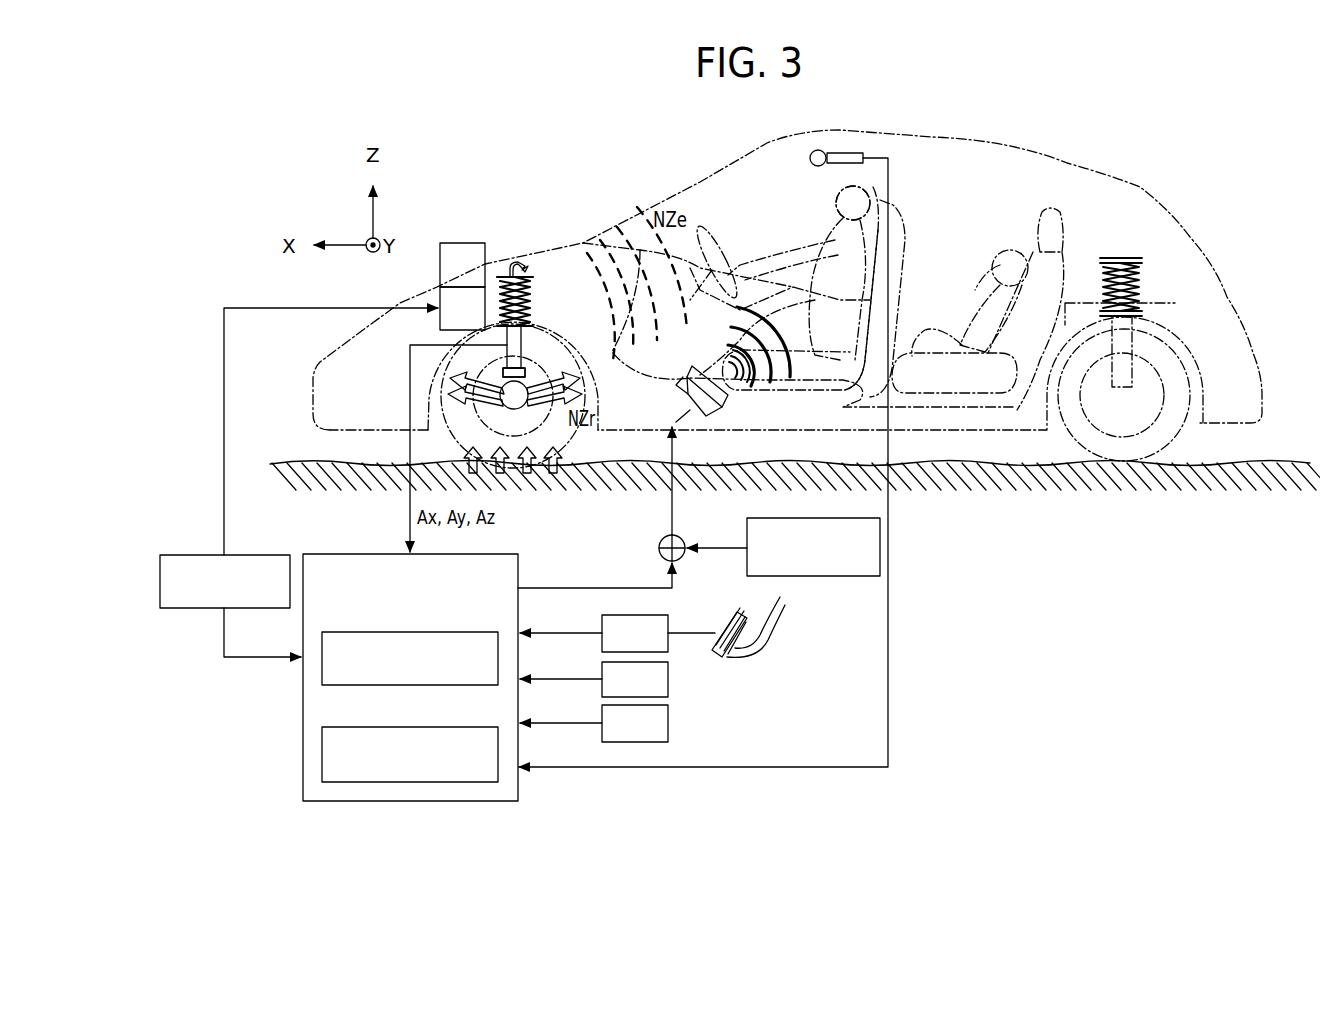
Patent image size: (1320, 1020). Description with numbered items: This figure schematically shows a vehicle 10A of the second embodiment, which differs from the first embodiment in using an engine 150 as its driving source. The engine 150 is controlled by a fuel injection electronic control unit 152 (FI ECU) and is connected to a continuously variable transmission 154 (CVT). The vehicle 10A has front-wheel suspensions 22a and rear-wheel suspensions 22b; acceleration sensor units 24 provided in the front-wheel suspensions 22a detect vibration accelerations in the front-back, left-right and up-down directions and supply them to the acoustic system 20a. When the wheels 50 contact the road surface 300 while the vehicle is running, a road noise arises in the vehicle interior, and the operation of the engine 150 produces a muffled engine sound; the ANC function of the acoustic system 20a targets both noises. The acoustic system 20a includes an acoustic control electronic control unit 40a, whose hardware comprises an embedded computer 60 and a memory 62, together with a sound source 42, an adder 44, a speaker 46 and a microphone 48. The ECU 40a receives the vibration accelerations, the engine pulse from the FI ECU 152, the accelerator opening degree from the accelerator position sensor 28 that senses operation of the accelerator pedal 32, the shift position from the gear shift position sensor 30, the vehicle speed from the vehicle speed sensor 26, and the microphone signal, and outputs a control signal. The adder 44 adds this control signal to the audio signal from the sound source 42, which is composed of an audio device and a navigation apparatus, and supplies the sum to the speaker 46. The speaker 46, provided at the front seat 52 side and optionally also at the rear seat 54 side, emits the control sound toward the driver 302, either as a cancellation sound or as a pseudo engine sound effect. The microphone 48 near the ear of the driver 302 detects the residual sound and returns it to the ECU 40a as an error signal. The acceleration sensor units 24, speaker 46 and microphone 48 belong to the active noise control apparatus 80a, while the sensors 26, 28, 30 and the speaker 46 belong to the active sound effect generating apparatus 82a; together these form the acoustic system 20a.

The vehicle 10A is at (253, 215).
The continuously variable transmission 154 is at (462, 243).
The engine 150 is at (440, 322).
The front-wheel suspensions 22a is at (530, 281).
The rear-wheel suspensions 22b is at (1103, 262).
The acceleration sensor units 24 is at (503, 372).
The wheels 50 is at (445, 409).
The road surface 300 is at (292, 462).
The speaker 46 is at (685, 401).
The front seat 52 is at (810, 378).
The microphone 48 is at (810, 158).
The driver 302 is at (836, 200).
The rear seat 54 is at (882, 310).
The fuel injection electronic control unit 152 is at (182, 555).
The acoustic control electronic control unit 40a is at (342, 554).
The embedded computer 60 is at (450, 632).
The memory 62 is at (450, 727).
The acoustic system 20a is at (393, 712).
The active noise control apparatus 80a is at (393, 712).
The active sound effect generating apparatus 82a is at (371, 810).
The adder 44 is at (660, 540).
The sound source 42 is at (813, 576).
The accelerator position sensor 28 is at (668, 618).
The gear shift position sensor 30 is at (668, 679).
The vehicle speed sensor 26 is at (668, 722).
The accelerator pedal 32 is at (733, 652).